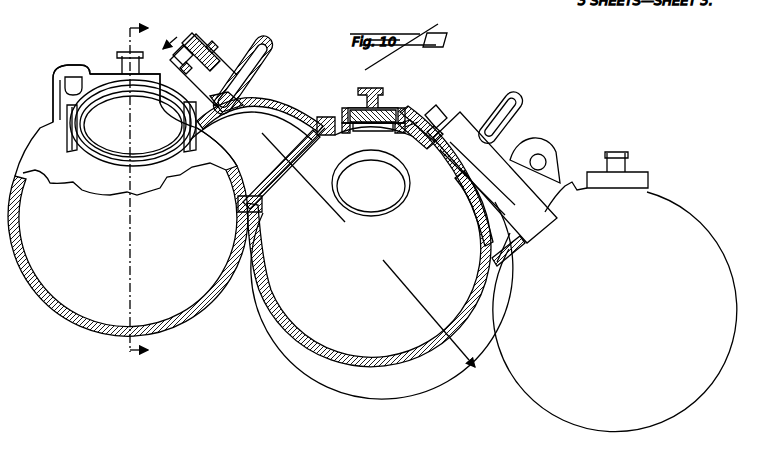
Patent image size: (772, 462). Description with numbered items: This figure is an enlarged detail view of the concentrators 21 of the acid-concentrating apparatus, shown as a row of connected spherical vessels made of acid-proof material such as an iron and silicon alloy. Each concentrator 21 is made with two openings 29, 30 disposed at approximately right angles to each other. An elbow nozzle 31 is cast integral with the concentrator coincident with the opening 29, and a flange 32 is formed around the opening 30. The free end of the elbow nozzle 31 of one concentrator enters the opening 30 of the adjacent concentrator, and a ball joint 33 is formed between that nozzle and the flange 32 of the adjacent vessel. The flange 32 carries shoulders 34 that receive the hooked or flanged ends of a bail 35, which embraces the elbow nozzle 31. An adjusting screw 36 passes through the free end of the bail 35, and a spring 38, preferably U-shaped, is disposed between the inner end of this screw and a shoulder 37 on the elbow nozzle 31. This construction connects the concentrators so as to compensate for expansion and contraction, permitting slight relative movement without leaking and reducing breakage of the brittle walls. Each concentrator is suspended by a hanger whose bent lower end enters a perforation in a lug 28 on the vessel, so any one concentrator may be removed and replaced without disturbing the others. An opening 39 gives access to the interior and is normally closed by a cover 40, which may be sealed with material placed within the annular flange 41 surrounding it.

The concentrator 21 is at (372, 248).
The lug 28 is at (64, 69).
The opening 29 is at (232, 171).
The opening 30 is at (312, 170).
The elbow nozzle 31 is at (305, 104).
The flange 32 is at (107, 173).
The ball joint 33 is at (332, 138).
The shoulder 34 is at (67, 125).
The bail 35 is at (258, 108).
The adjusting screw 36 is at (205, 60).
The shoulder 37 is at (237, 96).
The spring 38 is at (265, 44).
The opening 39 is at (416, 137).
The cover 40 is at (122, 60).
The annular flange 41 is at (160, 74).